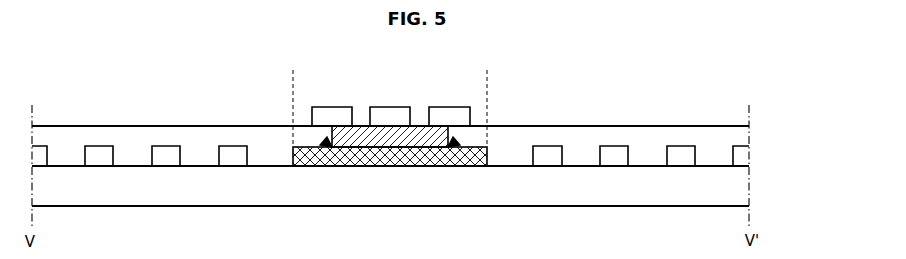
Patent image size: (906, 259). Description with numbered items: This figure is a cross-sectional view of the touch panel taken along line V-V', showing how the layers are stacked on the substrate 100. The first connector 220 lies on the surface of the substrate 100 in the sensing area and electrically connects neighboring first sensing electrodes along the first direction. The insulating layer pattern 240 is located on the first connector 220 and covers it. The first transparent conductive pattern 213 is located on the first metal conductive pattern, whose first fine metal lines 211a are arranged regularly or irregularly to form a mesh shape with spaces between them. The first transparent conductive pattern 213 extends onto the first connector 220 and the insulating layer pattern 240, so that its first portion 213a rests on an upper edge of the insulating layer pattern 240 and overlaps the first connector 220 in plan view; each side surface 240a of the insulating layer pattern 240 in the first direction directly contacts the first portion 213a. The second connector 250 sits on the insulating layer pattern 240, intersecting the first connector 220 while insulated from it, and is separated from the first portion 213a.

The substrate 100 is at (738, 185).
The first fine metal lines 211a is at (165, 160).
The first transparent conductive pattern 213 is at (715, 135).
The first portion 213a is at (333, 110).
The first connector 220 is at (372, 158).
The insulating layer pattern 240 is at (413, 137).
The side surface 240a is at (327, 137).
The second connector 250 is at (388, 113).